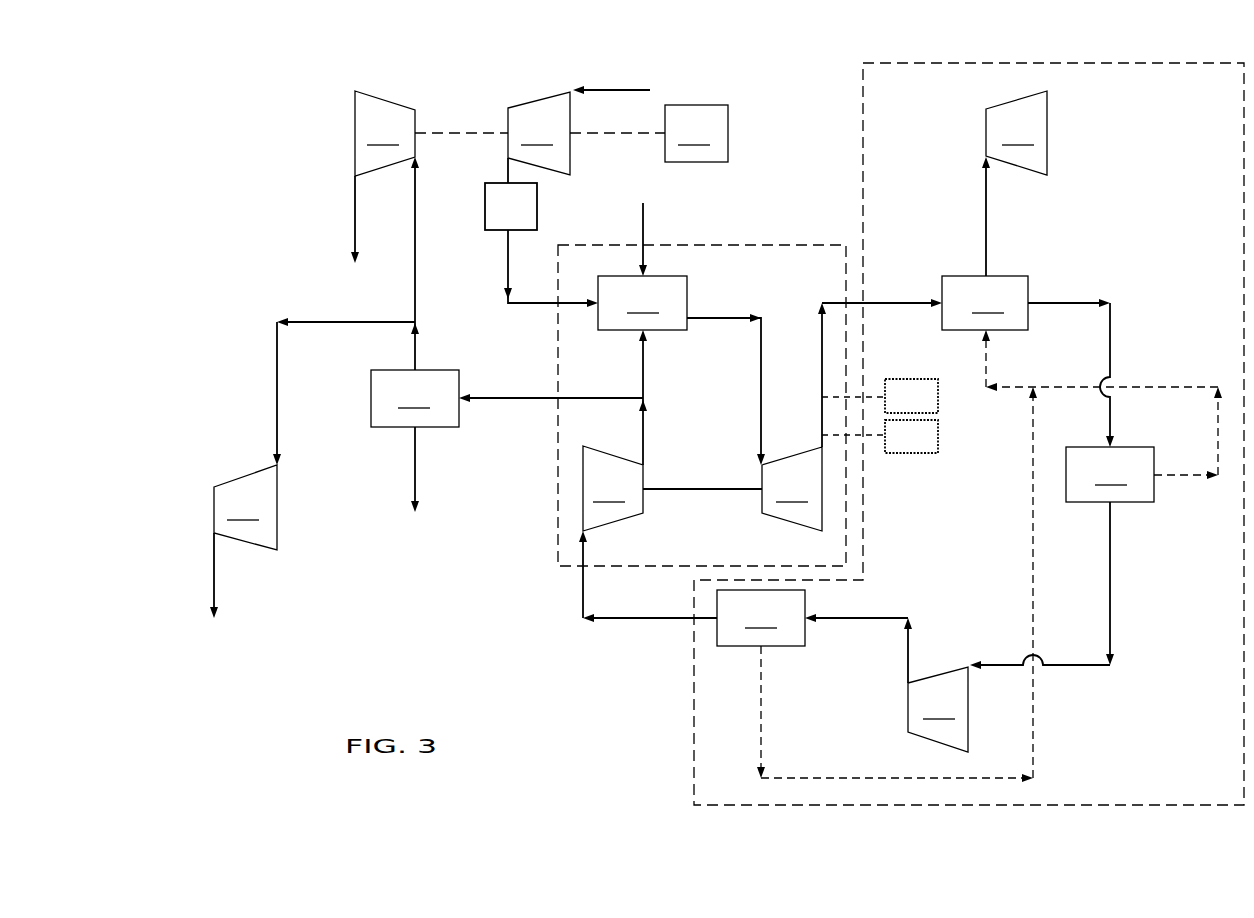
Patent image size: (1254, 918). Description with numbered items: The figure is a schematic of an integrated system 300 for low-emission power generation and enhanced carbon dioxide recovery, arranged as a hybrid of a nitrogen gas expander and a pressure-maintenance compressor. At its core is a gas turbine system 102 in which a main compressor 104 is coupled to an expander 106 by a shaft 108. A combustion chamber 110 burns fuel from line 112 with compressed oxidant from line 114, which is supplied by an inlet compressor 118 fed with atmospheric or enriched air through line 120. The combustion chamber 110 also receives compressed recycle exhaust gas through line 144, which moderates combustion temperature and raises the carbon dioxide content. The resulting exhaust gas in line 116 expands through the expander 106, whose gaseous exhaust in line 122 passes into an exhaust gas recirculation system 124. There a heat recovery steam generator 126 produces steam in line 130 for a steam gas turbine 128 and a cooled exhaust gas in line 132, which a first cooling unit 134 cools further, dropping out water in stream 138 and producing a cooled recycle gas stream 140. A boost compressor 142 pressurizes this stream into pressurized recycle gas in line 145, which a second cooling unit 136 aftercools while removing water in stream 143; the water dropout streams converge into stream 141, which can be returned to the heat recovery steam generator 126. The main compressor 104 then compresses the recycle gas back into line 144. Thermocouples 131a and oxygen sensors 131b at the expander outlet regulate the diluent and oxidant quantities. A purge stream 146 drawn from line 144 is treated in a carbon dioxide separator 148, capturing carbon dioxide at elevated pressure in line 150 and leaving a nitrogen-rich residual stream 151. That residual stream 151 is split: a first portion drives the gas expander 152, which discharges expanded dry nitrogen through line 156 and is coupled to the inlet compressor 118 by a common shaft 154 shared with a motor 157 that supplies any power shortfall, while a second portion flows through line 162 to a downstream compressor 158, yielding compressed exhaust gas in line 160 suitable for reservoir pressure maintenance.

The integrated system 300 is at (780, 148).
The gas turbine system 102 is at (747, 243).
The main compressor 104 is at (613, 488).
The expander 106 is at (792, 489).
The shaft 108 is at (705, 490).
The combustion chamber 110 is at (698, 296).
The fuel line 112 is at (640, 217).
The oxidant line 114 is at (535, 302).
The exhaust gas line 116 is at (761, 370).
The inlet compressor 118 is at (539, 133).
The feed oxidant line 120 is at (617, 90).
The gaseous exhaust line 122 is at (900, 302).
The exhaust gas recirculation system 124 is at (863, 168).
The heat recovery steam generator 126 is at (1017, 301).
The steam gas turbine 128 is at (1016, 133).
The steam line 130 is at (986, 218).
The thermocouples 131a is at (880, 396).
The oxygen sensors 131b is at (880, 436).
The cooled exhaust gas line 132 is at (1063, 305).
The first cooling unit 134 is at (1151, 500).
The second cooling unit 136 is at (797, 642).
The water dropout stream 138 is at (1177, 473).
The cooled recycle gas stream 140 is at (1110, 583).
The water return line 141 is at (986, 357).
The boost compressor 142 is at (938, 709).
The water dropout stream 143 is at (761, 730).
The compressed recycle exhaust gas line 144 is at (643, 437).
The pressurized recycle gas line 145 is at (892, 617).
The purge stream 146 is at (513, 400).
The CO2 separator 148 is at (462, 386).
The separated CO2 line 150 is at (415, 460).
The residual stream 151 is at (415, 263).
The gas expander 152 is at (385, 133).
The common shaft 154 is at (452, 132).
The expanded depressurized gas line 156 is at (354, 218).
The motor 157 is at (696, 121).
The downstream compressor 158 is at (245, 507).
The compressed exhaust gas line 160 is at (214, 575).
The residual stream branch line 162 is at (323, 322).